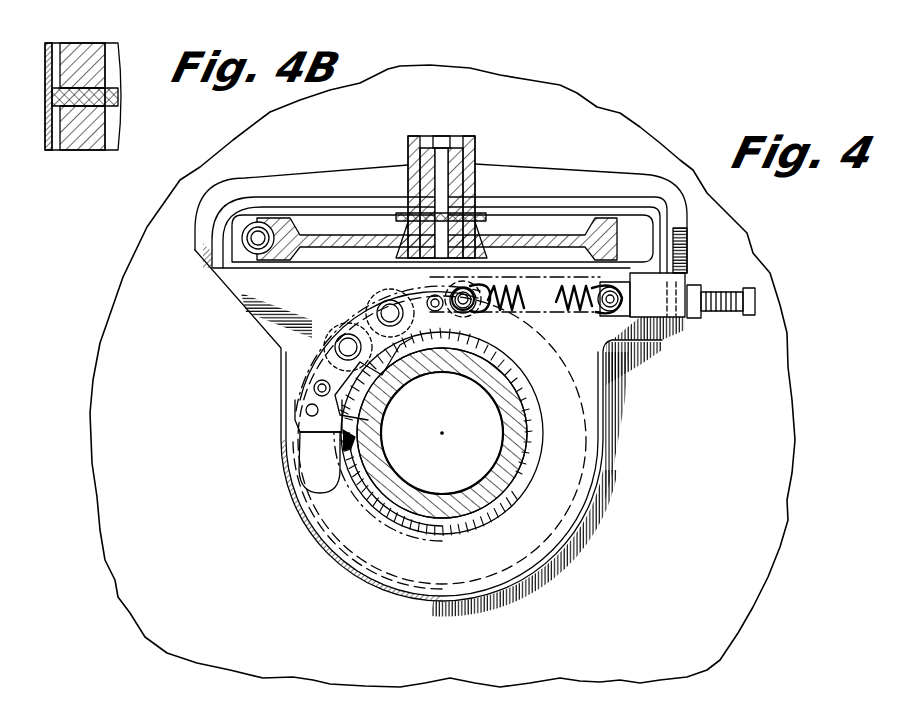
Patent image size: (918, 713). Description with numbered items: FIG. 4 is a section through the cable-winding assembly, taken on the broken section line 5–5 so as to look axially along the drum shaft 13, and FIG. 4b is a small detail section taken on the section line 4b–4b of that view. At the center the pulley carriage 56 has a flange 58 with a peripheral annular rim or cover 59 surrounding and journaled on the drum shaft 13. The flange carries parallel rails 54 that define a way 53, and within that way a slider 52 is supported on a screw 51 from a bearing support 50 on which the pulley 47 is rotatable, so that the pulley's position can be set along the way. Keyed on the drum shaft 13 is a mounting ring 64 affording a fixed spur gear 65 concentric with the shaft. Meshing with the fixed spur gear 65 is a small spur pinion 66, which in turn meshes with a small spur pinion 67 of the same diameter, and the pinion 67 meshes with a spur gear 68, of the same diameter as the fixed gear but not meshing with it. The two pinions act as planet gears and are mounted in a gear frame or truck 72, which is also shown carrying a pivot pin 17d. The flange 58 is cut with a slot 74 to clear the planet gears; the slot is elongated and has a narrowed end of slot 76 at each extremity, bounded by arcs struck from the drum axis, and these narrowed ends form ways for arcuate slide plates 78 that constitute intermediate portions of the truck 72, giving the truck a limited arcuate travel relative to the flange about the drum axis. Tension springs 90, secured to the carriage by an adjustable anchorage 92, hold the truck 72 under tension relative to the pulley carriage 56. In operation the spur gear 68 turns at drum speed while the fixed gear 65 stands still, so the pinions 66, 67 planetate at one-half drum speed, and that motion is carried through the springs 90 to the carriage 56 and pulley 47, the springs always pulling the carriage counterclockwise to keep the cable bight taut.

In FIG. 4, the drum shaft 13 is at (412, 503).
In FIG. 4, the pivot pin 17d is at (258, 255).
In FIG. 4, the pulley 47 is at (606, 232).
In FIG. 4, the bearing support 50 is at (402, 205).
In FIG. 4, the screw 51 is at (446, 136).
In FIG. 4, the slider 52 is at (476, 143).
In FIG. 4, the way 53 is at (480, 182).
In FIG. 4, the parallel rails 54 is at (478, 163).
In FIG. 4, the pulley carriage 56 is at (687, 240).
In FIG. 4B, the flange 58 is at (120, 96).
In FIG. 4, the flange 58 is at (490, 577).
In FIG. 4B, the peripheral annular rim or cover 59 is at (45, 62).
In FIG. 4, the peripheral annular rim or cover 59 is at (565, 198).
In FIG. 4, the mounting ring 64 is at (530, 387).
In FIG. 4, the fixed spur gear 65 is at (490, 332).
In FIG. 4, the small spur pinion 66 is at (373, 286).
In FIG. 4, the small spur pinion 67 is at (352, 316).
In FIG. 4, the spur gear 68 is at (380, 394).
In FIG. 4B, the gear frame or truck 72 is at (72, 44).
In FIG. 4, the slot 74 is at (370, 298).
In FIG. 4B, the narrowed end of slot 76 is at (100, 102).
In FIG. 4, the narrowed end of slot 76 is at (322, 492).
In FIG. 4B, the arcuate slide plates 78 is at (102, 74).
In FIG. 4, the tension springs 90 is at (526, 297).
In FIG. 4, the adjustable anchorage 92 is at (673, 330).
In FIG. 4, the adjusting bolt / section line 5 is at (690, 283).
In FIG. 4, the section line 4b is at (263, 438).